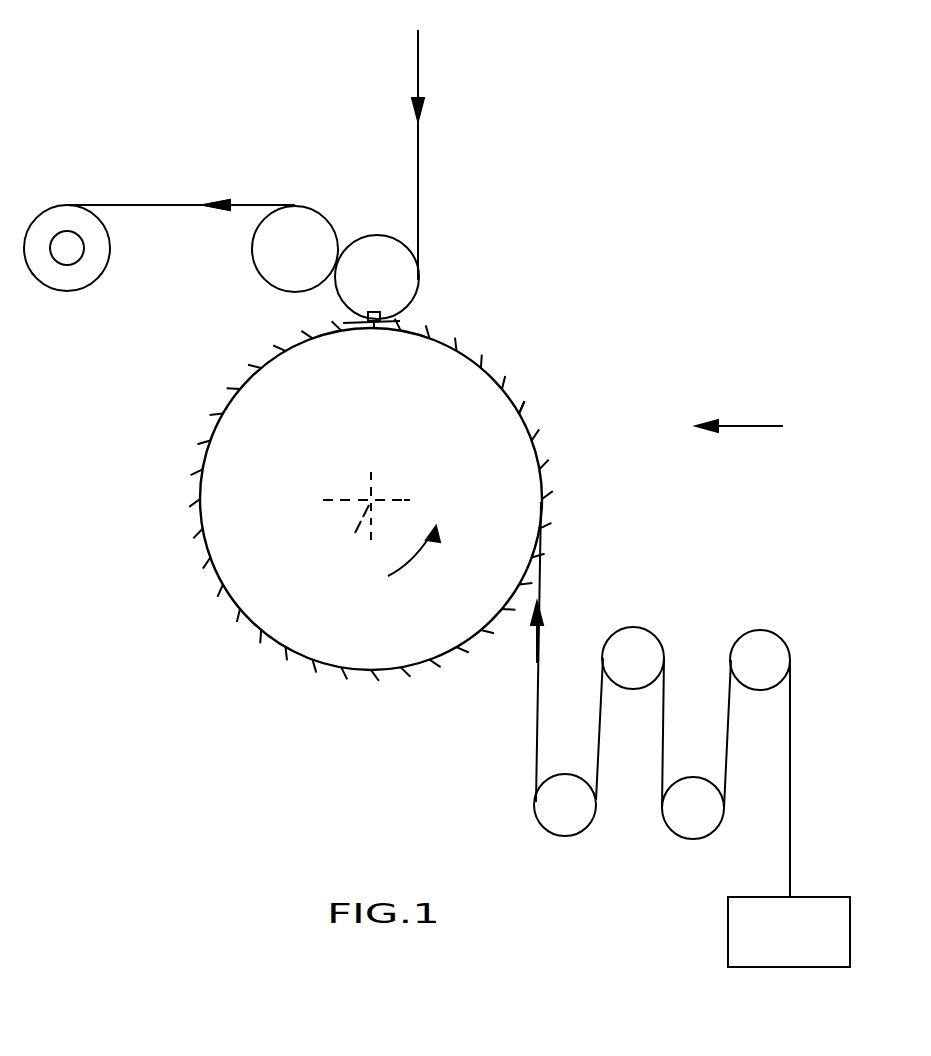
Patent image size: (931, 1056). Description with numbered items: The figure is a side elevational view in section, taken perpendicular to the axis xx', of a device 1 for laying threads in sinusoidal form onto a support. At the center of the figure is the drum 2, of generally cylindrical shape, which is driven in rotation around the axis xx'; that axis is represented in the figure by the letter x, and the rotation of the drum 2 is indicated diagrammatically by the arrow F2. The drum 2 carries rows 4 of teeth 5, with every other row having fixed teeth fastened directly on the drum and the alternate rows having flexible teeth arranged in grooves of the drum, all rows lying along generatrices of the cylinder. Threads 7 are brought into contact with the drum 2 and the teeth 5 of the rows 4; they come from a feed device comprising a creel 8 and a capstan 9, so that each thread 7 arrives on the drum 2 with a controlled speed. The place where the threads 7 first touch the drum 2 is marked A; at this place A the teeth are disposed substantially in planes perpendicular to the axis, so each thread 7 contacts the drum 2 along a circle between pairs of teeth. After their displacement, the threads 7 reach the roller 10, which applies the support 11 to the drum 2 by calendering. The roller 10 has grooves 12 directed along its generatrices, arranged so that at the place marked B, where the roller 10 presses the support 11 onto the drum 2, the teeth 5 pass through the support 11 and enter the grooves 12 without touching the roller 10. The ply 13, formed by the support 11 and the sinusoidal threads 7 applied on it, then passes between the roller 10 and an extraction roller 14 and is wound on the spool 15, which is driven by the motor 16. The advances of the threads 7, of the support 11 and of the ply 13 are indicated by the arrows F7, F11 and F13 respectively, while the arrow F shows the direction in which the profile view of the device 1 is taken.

The device 1 is at (666, 292).
The drum 2 is at (238, 608).
The rows of teeth 4 is at (484, 367).
The teeth 5 is at (522, 412).
The threads 7 is at (535, 735).
The creel 8 is at (728, 928).
The capstan 9 is at (578, 834).
The roller 10 is at (419, 283).
The support 11 is at (418, 187).
The grooves 12 is at (355, 322).
The ply 13 is at (100, 205).
The extraction roller 14 is at (262, 278).
The spool 15 is at (109, 255).
The motor 16 is at (50, 262).
The place of thread arrival A is at (542, 510).
The place of support application B is at (374, 327).
The viewing direction arrow F is at (748, 427).
The drum rotation arrow F2 is at (437, 538).
The thread advance arrow F7 is at (553, 638).
The support advance arrow F11 is at (418, 62).
The ply advance arrow F13 is at (256, 204).